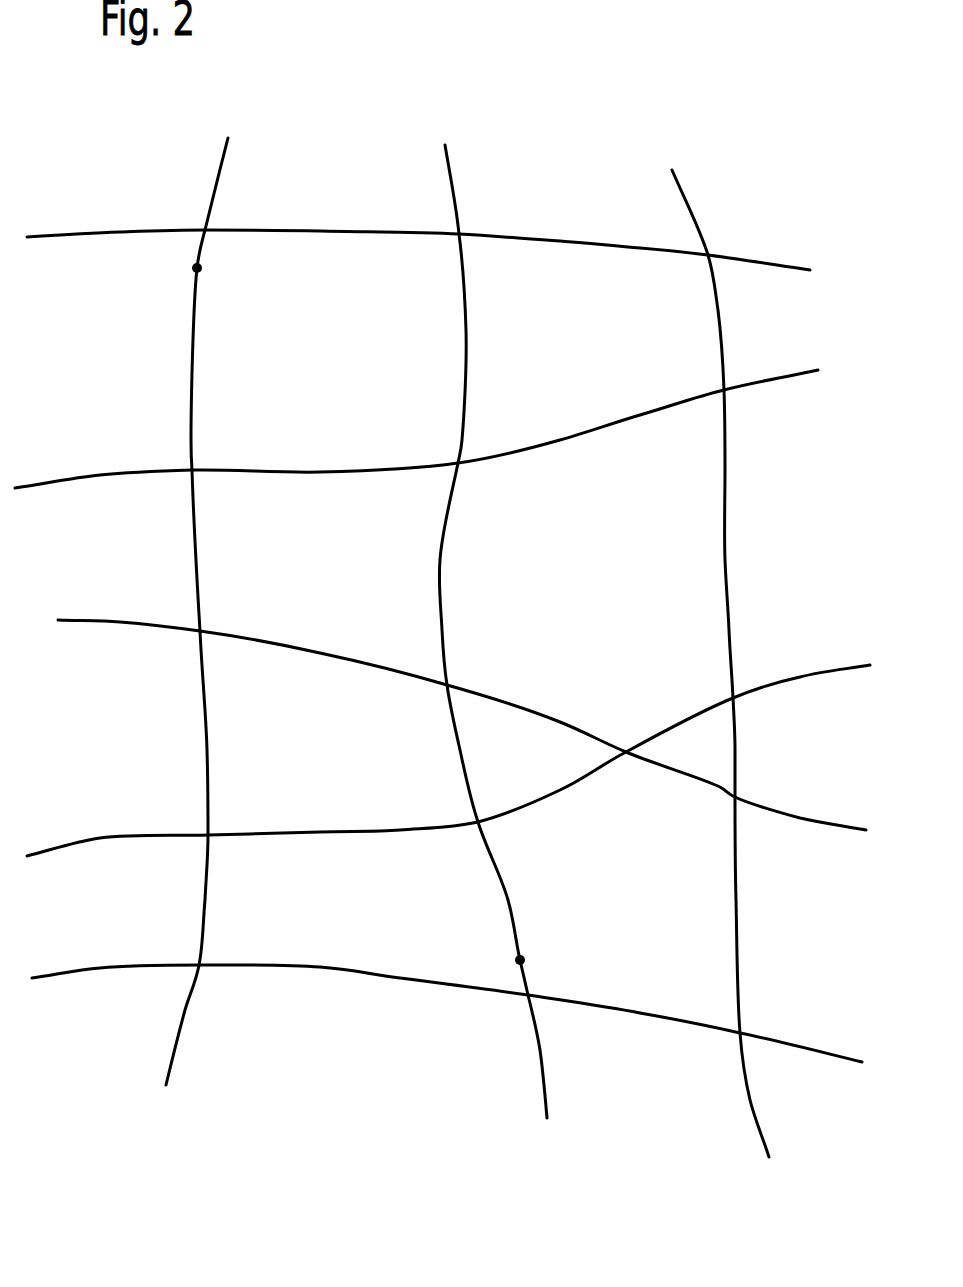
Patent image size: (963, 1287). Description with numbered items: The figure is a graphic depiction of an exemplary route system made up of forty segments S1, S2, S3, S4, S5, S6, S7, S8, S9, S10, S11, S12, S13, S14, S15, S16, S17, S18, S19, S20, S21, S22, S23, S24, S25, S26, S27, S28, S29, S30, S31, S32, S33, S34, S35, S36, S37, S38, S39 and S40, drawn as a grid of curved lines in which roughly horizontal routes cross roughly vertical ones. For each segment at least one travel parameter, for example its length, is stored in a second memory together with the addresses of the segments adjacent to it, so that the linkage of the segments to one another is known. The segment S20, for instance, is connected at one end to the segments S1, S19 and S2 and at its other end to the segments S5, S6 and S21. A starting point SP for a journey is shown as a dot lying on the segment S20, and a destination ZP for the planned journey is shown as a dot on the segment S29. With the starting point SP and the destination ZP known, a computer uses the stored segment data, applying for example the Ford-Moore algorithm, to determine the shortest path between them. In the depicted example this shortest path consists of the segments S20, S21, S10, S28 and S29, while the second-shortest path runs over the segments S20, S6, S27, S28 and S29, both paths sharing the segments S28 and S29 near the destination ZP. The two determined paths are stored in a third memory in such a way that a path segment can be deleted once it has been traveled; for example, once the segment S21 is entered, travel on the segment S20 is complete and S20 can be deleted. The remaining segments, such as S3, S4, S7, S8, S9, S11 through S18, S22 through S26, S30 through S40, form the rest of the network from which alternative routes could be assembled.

The segment S1 is at (116, 215).
The segment S2 is at (332, 214).
The segment S3 is at (583, 229).
The segment S4 is at (759, 248).
The segment S5 is at (103, 462).
The segment S6 is at (325, 456).
The segment S7 is at (591, 426).
The segment S8 is at (771, 365).
The segment S9 is at (129, 608).
The segment S10 is at (323, 649).
The segment S11 is at (536, 713).
The segment S12 is at (680, 769).
The segment S13 is at (800, 806).
The segment S14 is at (117, 832).
The segment S15 is at (343, 818).
The segment S16 is at (552, 787).
The segment S17 is at (679, 722).
The segment S18 is at (801, 669).
The segment S19 is at (204, 184).
The segment S20 is at (181, 350).
The segment S21 is at (185, 550).
The segment S22 is at (190, 733).
The segment S23 is at (188, 900).
The segment S24 is at (170, 1025).
The segment S25 is at (440, 189).
The segment S26 is at (451, 348).
The segment S27 is at (431, 574).
The segment S28 is at (453, 753).
The segment S29 is at (497, 908).
The segment S30 is at (526, 1056).
The segment S31 is at (681, 212).
The segment S32 is at (706, 322).
The segment S33 is at (712, 544).
The segment S34 is at (754, 747).
The segment S35 is at (721, 915).
The segment S36 is at (740, 1095).
The segment S37 is at (115, 954).
The segment S38 is at (363, 964).
The segment S39 is at (634, 1002).
The segment S40 is at (801, 1034).
The starting point SP is at (180, 266).
The destination ZP is at (544, 960).